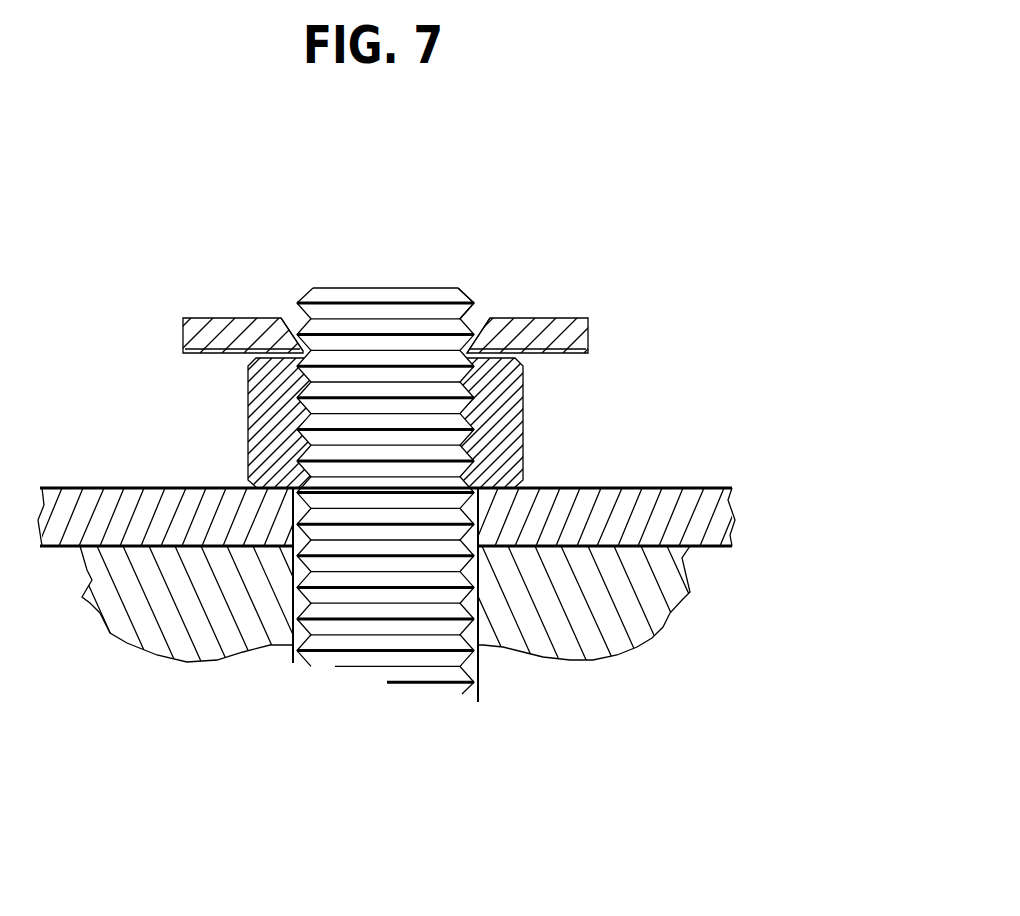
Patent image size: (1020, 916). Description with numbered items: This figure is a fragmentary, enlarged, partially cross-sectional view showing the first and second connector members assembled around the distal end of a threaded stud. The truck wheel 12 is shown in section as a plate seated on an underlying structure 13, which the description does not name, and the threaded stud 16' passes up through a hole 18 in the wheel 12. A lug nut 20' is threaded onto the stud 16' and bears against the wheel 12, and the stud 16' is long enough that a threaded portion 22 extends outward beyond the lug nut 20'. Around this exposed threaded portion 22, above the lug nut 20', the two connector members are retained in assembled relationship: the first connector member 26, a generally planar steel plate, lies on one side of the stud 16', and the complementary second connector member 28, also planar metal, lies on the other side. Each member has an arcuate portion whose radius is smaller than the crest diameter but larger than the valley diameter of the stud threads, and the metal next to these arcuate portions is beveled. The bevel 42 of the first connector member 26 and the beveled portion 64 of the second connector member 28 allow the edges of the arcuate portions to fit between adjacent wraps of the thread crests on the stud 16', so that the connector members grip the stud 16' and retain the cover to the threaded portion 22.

The threaded stud 16' is at (385, 418).
The threaded portion 22 is at (465, 292).
The second connector member 28 is at (213, 320).
The beveled portion 64 is at (292, 319).
The first connector member 26 is at (577, 287).
The bevel 42 is at (480, 320).
The lug nut 20' is at (413, 423).
The truck wheel 12 is at (690, 483).
The substrate body 13 is at (663, 637).
The hole 18 is at (328, 530).